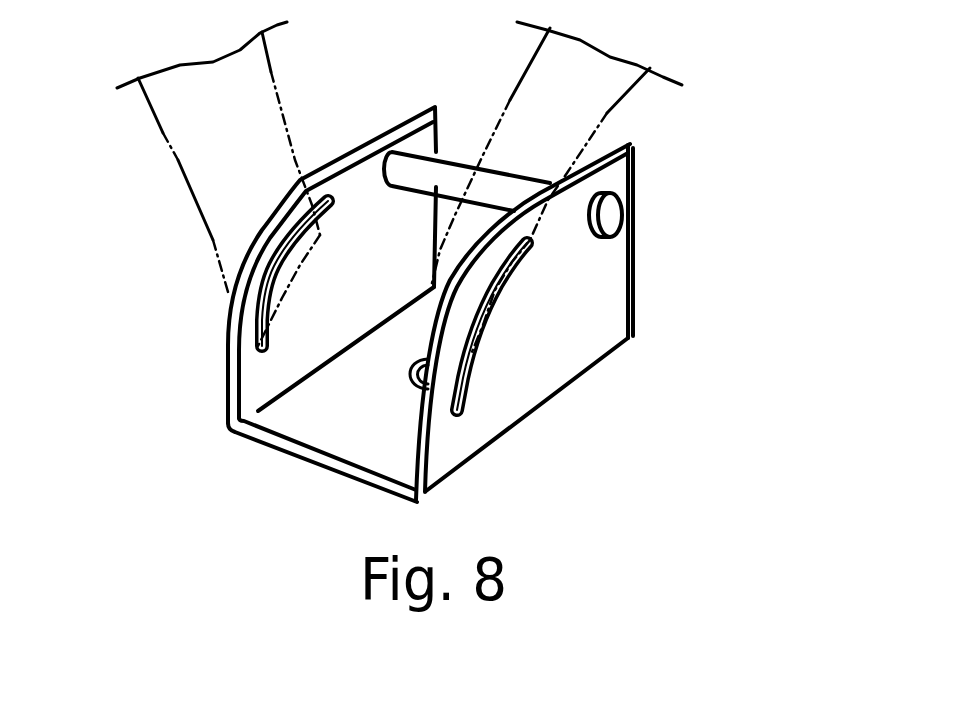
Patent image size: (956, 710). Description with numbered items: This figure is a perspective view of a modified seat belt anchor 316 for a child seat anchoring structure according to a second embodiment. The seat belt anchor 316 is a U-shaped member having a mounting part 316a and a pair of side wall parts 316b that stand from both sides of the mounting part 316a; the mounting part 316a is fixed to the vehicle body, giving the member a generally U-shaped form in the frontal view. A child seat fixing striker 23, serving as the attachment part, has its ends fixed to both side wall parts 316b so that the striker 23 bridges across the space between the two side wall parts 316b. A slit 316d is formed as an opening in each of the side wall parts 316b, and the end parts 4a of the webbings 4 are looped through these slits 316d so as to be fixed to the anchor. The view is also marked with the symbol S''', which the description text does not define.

The seat belt anchor 316 is at (638, 338).
The mounting part 316a is at (363, 428).
The side wall parts 316b is at (227, 373).
The slit 316d is at (310, 230).
The child seat fixing striker 23 is at (447, 170).
The webbing 4 is at (180, 155).
The end part of webbing 4a is at (227, 293).
The support structure / viewing direction S''' is at (753, 173).